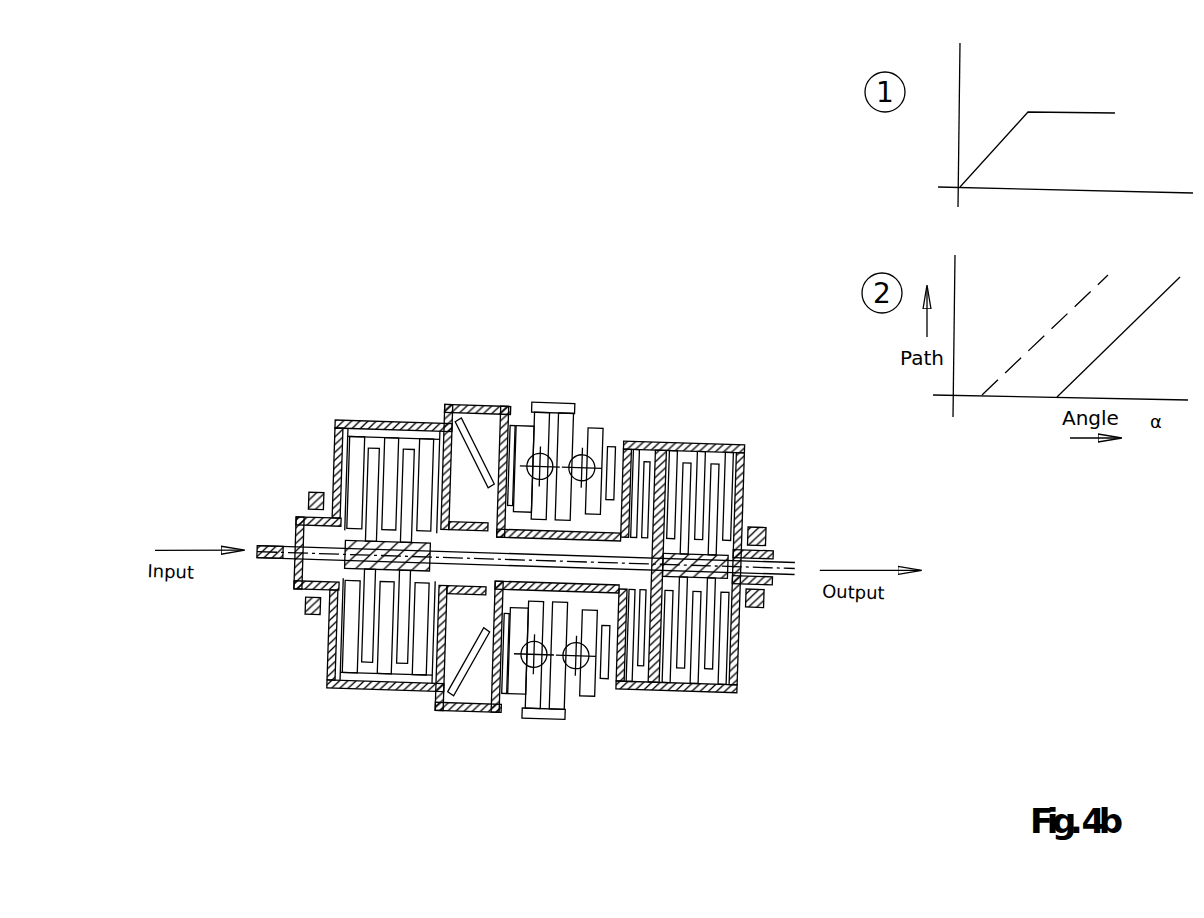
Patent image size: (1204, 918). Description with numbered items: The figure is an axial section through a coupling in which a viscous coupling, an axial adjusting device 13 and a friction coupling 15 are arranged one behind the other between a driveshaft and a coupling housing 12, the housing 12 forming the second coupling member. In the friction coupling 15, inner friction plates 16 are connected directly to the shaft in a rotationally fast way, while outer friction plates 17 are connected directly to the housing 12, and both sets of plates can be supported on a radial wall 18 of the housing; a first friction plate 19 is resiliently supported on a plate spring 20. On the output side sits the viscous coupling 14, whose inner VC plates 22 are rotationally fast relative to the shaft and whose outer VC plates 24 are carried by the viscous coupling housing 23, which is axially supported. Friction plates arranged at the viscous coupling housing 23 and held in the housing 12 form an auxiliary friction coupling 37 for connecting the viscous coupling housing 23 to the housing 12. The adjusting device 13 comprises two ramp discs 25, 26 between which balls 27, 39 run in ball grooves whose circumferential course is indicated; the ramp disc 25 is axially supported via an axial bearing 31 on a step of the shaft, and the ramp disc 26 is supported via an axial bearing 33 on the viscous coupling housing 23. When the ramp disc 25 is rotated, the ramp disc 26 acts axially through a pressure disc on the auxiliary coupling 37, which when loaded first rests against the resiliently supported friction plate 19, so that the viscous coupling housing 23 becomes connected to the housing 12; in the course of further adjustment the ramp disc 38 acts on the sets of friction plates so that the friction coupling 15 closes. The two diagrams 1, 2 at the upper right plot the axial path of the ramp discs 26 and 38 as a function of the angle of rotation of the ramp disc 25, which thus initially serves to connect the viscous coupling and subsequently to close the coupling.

The first clutch path 1 is at (519, 687).
The second clutch path 2 is at (594, 685).
The coupling housing 12 is at (475, 400).
The axial adjusting assembly 13 is at (548, 730).
The second clutch 14 is at (695, 719).
The friction coupling 15 is at (388, 710).
The inner friction plates 16 is at (346, 424).
The outer friction plates 17 is at (369, 439).
The radial wall 18 is at (327, 452).
The first friction plate 19 is at (496, 409).
The plate spring 20 is at (443, 414).
The inner VC plates 22 is at (714, 430).
The viscous coupling housing 23 is at (739, 429).
The outer VC plates 24 is at (686, 431).
The ramp disc 25 is at (563, 421).
The ramp disc 26 is at (592, 424).
The balls 27 is at (580, 440).
The axial bearing 31 is at (626, 442).
The axial bearing 33 is at (511, 419).
The auxiliary friction coupling 37 is at (658, 333).
The ramp disc 38 is at (523, 398).
The balls 39 is at (537, 449).